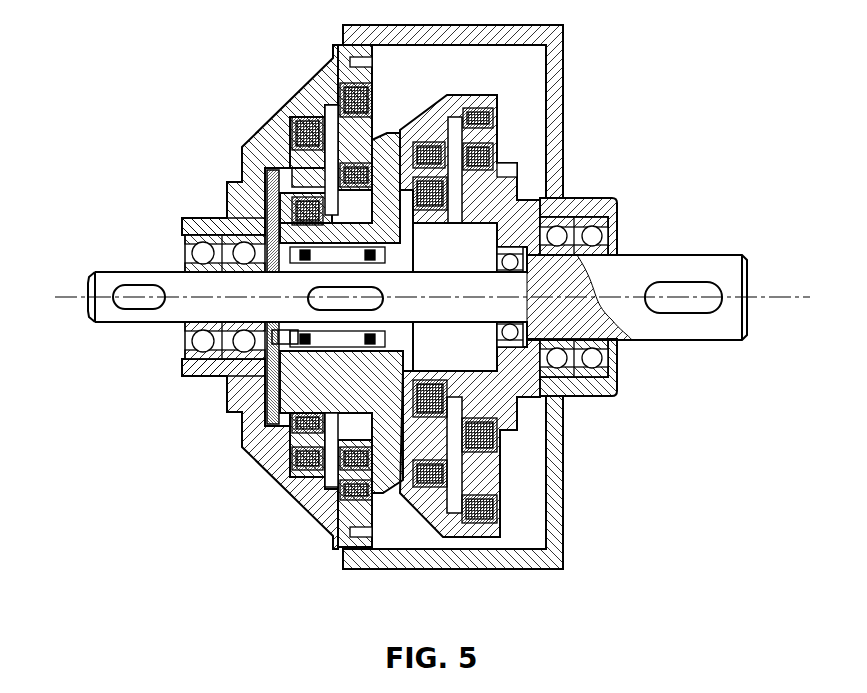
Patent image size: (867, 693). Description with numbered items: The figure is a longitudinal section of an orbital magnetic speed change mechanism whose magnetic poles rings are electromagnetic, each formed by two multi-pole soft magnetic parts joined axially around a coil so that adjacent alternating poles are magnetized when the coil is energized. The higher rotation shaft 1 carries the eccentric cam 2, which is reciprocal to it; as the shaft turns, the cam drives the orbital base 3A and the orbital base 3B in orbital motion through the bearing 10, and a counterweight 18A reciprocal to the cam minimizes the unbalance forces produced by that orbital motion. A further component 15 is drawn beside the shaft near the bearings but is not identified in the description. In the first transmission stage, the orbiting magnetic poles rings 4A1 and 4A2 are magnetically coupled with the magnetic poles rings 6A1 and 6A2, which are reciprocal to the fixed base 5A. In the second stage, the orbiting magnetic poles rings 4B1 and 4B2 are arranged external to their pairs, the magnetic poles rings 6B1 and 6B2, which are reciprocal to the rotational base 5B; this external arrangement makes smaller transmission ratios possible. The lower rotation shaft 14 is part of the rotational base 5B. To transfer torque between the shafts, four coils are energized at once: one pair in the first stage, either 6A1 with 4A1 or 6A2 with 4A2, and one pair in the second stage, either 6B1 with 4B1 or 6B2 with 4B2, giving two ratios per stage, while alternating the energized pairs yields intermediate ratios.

The higher rotation shaft 1 is at (168, 312).
The eccentric cam 2 is at (253, 363).
The orbital base 3A is at (313, 230).
The orbital base 3B is at (497, 93).
The magnetic poles ring 4A1 is at (288, 412).
The magnetic poles ring 4A2 is at (338, 468).
The magnetic poles ring 4B1 is at (443, 463).
The magnetic poles ring 4B2 is at (482, 517).
The fixed base 5A is at (327, 68).
The rotational base 5B is at (508, 408).
The magnetic poles ring 6A1 is at (290, 458).
The magnetic poles ring 6A2 is at (340, 513).
The magnetic poles ring 6B1 is at (500, 200).
The magnetic poles ring 6B2 is at (497, 143).
The bearing 10 is at (307, 358).
The lower rotation shaft 14 is at (672, 345).
The bearing 15 is at (190, 253).
The counterweight 18A is at (296, 172).